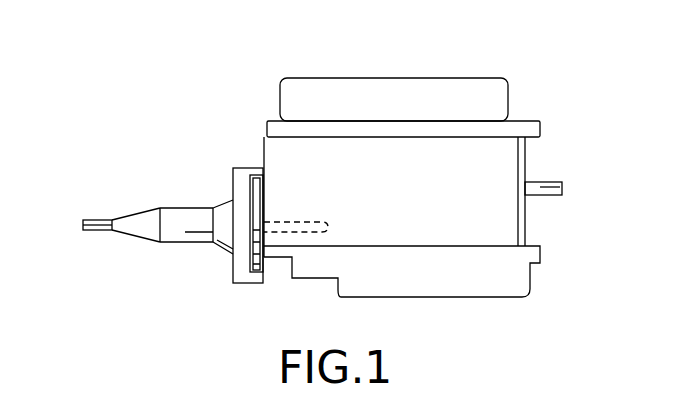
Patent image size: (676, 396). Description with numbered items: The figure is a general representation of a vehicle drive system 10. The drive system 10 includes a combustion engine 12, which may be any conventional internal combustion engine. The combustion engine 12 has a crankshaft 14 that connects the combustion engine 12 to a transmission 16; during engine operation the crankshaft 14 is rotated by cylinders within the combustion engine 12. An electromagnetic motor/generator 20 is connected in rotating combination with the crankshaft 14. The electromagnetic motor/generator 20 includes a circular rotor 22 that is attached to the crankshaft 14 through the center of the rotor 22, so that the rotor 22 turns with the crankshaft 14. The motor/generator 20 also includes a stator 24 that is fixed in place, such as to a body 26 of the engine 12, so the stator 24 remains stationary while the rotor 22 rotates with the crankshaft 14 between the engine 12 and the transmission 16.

The vehicle drive system 10 is at (161, 97).
The combustion engine 12 is at (475, 78).
The crankshaft 14 is at (297, 219).
The transmission 16 is at (172, 205).
The electromagnetic motor/generator 20 is at (238, 150).
The circular rotor 22 is at (232, 273).
The stator 24 is at (266, 267).
The body 26 is at (264, 166).